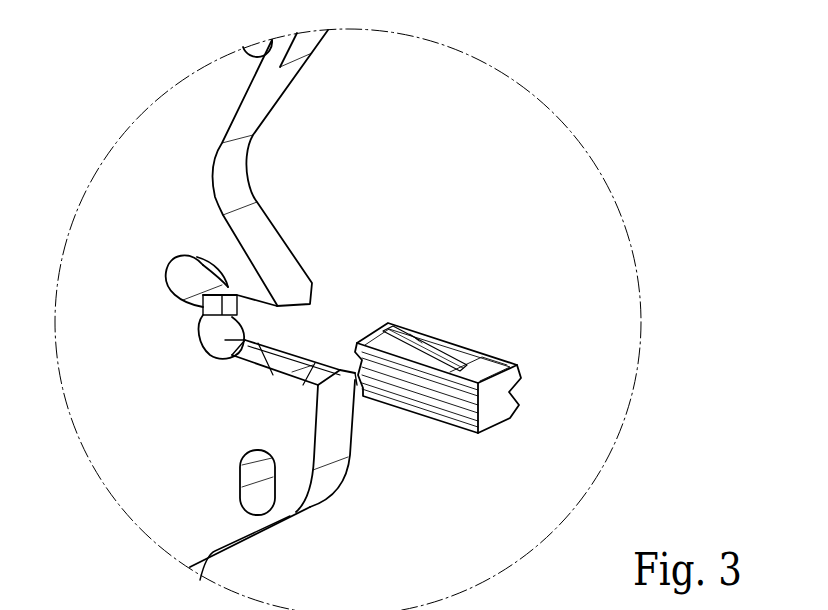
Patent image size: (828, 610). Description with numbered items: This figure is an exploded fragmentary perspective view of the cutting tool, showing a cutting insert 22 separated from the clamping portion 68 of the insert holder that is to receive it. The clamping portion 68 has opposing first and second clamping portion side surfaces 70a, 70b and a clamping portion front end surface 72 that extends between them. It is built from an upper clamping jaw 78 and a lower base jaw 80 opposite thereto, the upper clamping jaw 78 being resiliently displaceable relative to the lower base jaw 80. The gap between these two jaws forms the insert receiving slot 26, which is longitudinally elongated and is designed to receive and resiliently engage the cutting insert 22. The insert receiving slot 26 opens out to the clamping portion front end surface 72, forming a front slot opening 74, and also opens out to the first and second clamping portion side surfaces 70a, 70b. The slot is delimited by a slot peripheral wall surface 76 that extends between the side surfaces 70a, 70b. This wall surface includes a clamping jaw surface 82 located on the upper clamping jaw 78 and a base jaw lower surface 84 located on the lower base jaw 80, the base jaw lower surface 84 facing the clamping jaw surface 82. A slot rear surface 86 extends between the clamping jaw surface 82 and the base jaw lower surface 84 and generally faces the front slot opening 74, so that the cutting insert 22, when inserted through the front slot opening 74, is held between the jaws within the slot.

The cutting insert 22 is at (500, 333).
The insert receiving slot 26 is at (304, 327).
The clamping portion 68 is at (583, 86).
The first clamping portion side surface 70a is at (142, 422).
The second clamping portion side surface 70b is at (289, 217).
The clamping portion front end surface 72 is at (332, 438).
The front slot opening 74 is at (381, 327).
The slot peripheral wall surface 76 is at (225, 340).
The upper clamping jaw 78 is at (280, 272).
The lower base jaw 80 is at (285, 436).
The clamping jaw surface 82 is at (243, 318).
The base jaw lower surface 84 is at (326, 379).
The slot rear surface 86 is at (205, 314).